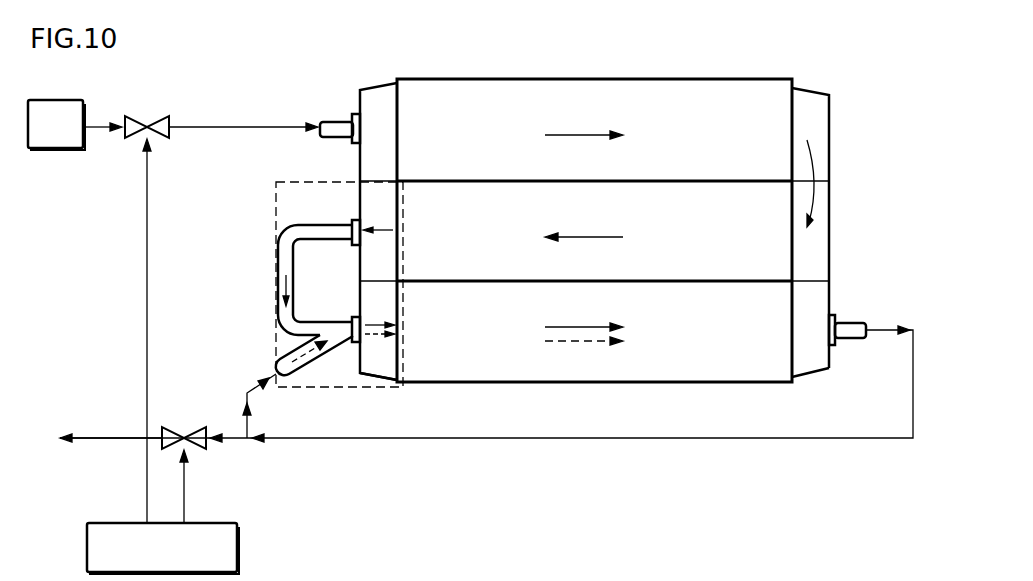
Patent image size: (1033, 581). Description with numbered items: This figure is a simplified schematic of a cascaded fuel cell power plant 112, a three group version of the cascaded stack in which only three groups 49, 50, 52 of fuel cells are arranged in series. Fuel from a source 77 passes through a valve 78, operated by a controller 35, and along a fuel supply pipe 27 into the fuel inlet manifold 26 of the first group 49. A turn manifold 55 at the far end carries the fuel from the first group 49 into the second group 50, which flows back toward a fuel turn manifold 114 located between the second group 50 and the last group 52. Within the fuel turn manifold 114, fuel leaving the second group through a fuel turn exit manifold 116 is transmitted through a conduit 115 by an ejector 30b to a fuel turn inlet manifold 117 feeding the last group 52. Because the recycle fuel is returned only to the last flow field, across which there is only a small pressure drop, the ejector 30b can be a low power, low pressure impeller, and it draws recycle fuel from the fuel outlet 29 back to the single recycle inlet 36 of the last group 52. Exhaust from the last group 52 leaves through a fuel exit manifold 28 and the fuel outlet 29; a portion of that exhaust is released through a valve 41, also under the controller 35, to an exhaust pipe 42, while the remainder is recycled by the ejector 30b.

The cascaded fuel cell power plant 112 is at (720, 61).
The first substack of fuel cells 49 is at (724, 141).
The second substack of fuel cells 50 is at (722, 246).
The last substack of fuel cells 52 is at (722, 339).
The fuel inlet manifold 26 is at (372, 101).
The fuel supply pipe 27 is at (341, 137).
The turn manifold 55 is at (801, 121).
The fuel exit manifold 28 is at (806, 362).
The fuel outlet pipe 29 is at (856, 323).
The fuel source 77 is at (70, 100).
The valve 78 is at (143, 116).
The fuel turn manifold 114 is at (272, 205).
The conduit 115 is at (308, 232).
The fuel turn exit manifold 116 is at (378, 205).
The recycle inlet 36 is at (352, 325).
The ejector 30b is at (306, 353).
The fuel turn inlet manifold 117 is at (369, 371).
The valve 41 is at (184, 430).
The exhaust pipe 42 is at (80, 436).
The controller 35 is at (213, 523).